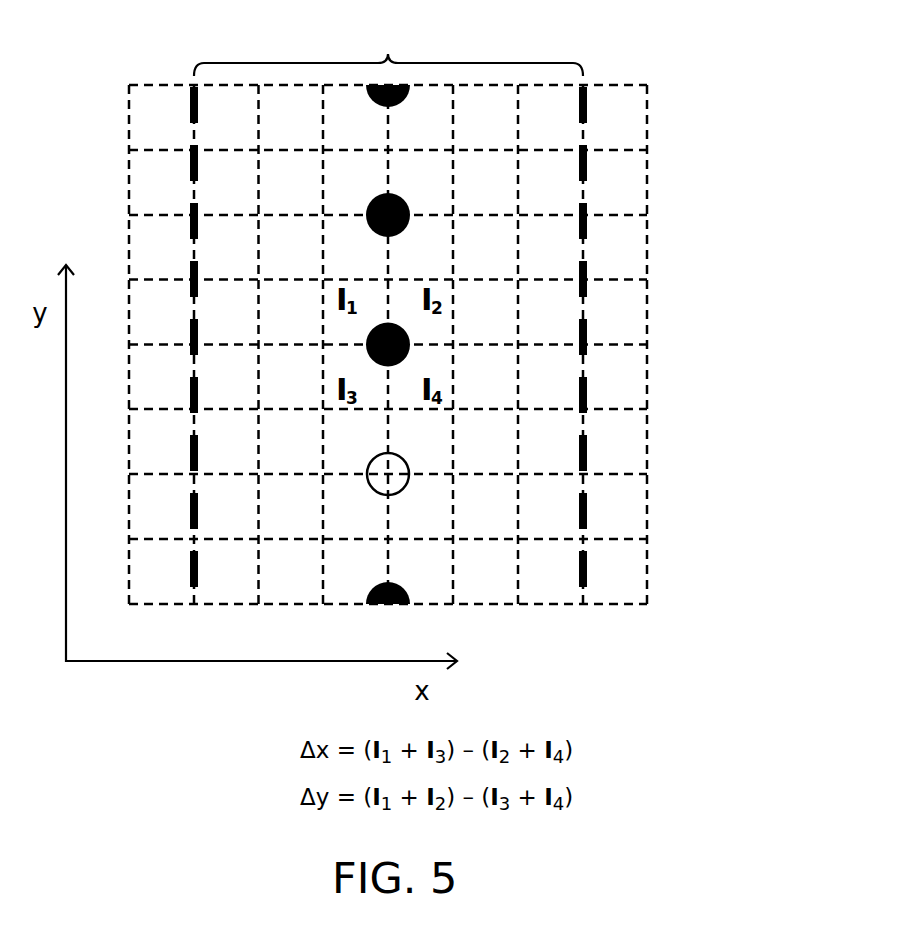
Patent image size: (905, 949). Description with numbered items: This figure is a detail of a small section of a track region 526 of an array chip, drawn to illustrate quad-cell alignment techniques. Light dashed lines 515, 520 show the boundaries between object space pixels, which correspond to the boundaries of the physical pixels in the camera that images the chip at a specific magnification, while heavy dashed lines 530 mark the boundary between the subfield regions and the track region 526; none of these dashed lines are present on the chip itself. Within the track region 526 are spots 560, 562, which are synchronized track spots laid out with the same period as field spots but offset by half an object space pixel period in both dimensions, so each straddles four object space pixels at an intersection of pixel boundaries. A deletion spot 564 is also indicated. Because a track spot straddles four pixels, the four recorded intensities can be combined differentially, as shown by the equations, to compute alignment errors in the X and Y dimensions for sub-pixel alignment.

The light dashed line 515 is at (257, 117).
The light dashed line 520 is at (618, 216).
The track region 526 is at (388, 52).
The heavy dashed line 530 is at (587, 390).
The spot 560 is at (397, 195).
The spot 562 is at (407, 336).
The deletion spot 564 is at (402, 461).